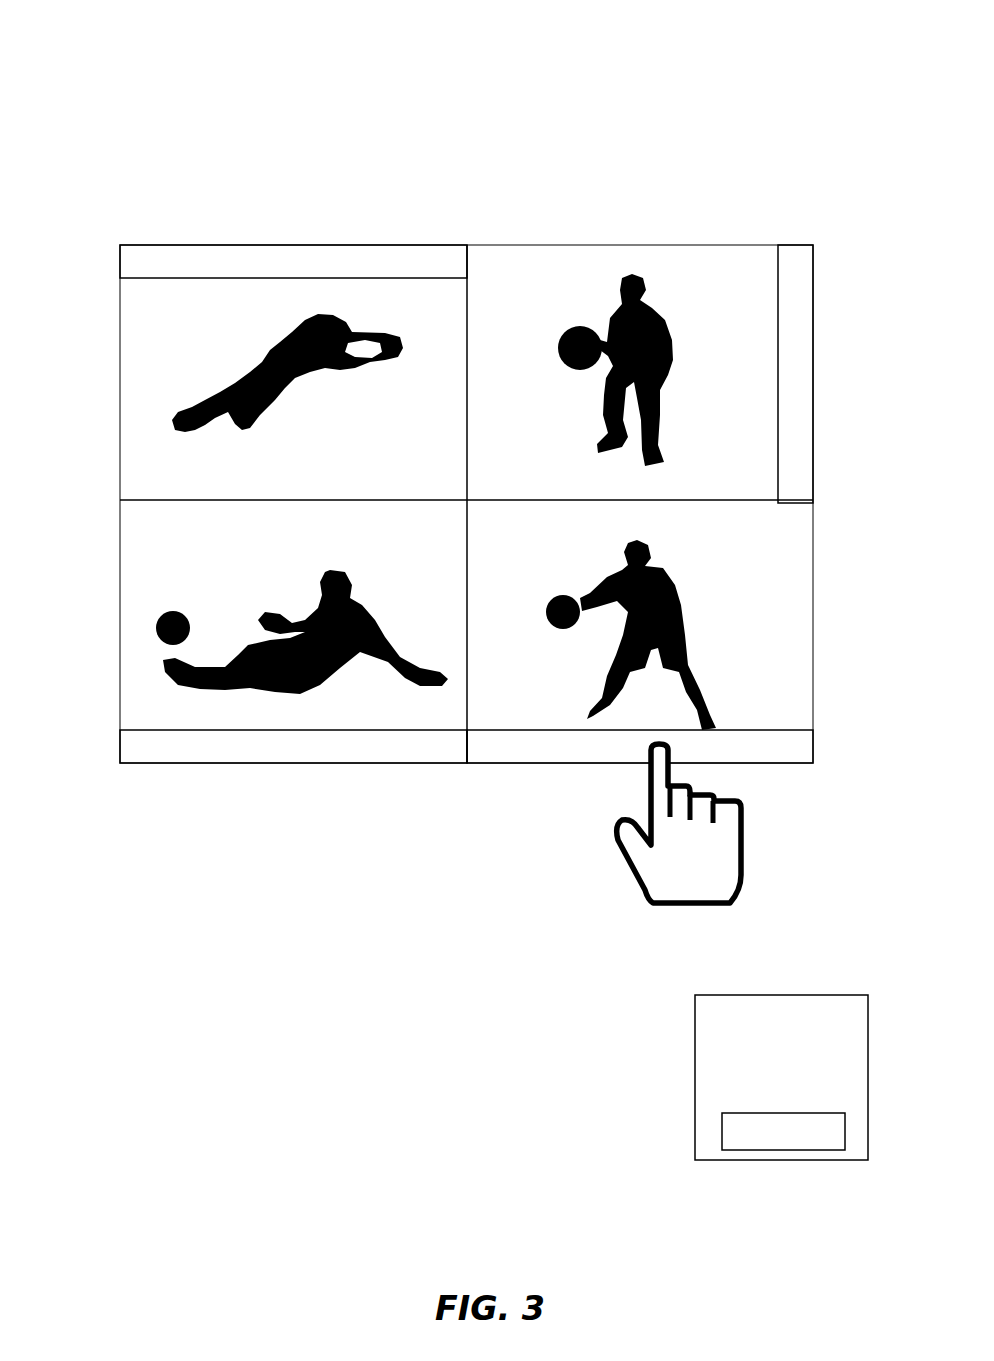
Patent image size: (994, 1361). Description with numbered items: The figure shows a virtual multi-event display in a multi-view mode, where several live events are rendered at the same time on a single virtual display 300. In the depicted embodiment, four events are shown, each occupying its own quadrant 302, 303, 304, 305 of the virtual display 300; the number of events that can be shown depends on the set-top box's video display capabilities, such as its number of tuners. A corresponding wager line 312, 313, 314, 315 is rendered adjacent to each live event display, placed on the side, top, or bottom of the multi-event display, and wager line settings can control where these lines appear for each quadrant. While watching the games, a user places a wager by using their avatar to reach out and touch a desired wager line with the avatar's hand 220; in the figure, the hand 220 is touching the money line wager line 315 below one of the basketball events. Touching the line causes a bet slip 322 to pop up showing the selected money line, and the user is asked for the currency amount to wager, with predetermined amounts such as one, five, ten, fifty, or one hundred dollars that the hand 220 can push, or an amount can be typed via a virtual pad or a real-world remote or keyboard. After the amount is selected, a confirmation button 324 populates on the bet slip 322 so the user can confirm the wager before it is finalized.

The virtual display 300 is at (254, 97).
The quadrant 302 is at (130, 345).
The quadrant 303 is at (570, 257).
The quadrant 304 is at (127, 563).
The quadrant 305 is at (803, 655).
The wager line 312 is at (237, 255).
The wager line 313 is at (800, 313).
The wager line 314 is at (253, 750).
The wager line 315 is at (537, 750).
The avatar's hand 220 is at (693, 892).
The bet slip 322 is at (747, 1126).
The confirmation button 324 is at (810, 1160).